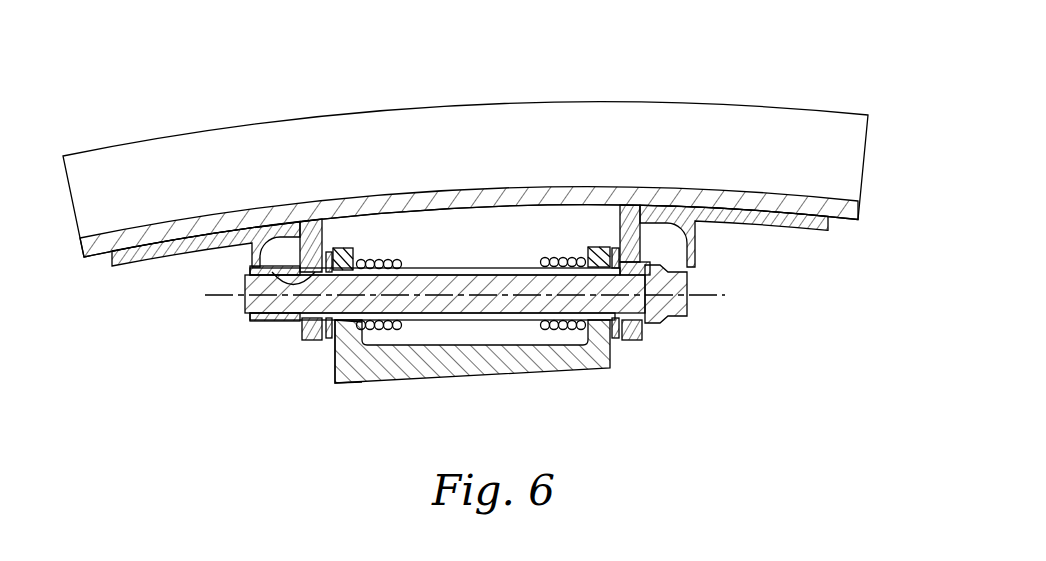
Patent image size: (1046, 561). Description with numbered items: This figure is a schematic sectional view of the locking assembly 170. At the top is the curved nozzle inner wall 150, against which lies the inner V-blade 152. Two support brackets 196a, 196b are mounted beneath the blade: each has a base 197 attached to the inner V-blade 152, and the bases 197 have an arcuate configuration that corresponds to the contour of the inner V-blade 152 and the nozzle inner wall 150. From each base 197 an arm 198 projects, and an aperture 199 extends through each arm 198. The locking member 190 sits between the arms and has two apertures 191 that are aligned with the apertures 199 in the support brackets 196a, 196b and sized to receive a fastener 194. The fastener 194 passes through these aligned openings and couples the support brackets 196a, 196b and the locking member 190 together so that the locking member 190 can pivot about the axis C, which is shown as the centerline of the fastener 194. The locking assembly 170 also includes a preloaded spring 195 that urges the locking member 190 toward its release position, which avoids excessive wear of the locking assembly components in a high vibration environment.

The nozzle inner wall 150 is at (604, 122).
The inner V-blade 152 is at (863, 208).
The locking assembly 170 is at (703, 417).
The locking member 190 is at (585, 362).
The apertures 191 is at (593, 267).
The fastener 194 is at (683, 300).
The preloaded spring 195 is at (367, 378).
The support bracket 196a is at (790, 222).
The support bracket 196b is at (176, 266).
The base 197 is at (127, 266).
The arm 198 is at (305, 341).
The aperture 199 is at (253, 242).